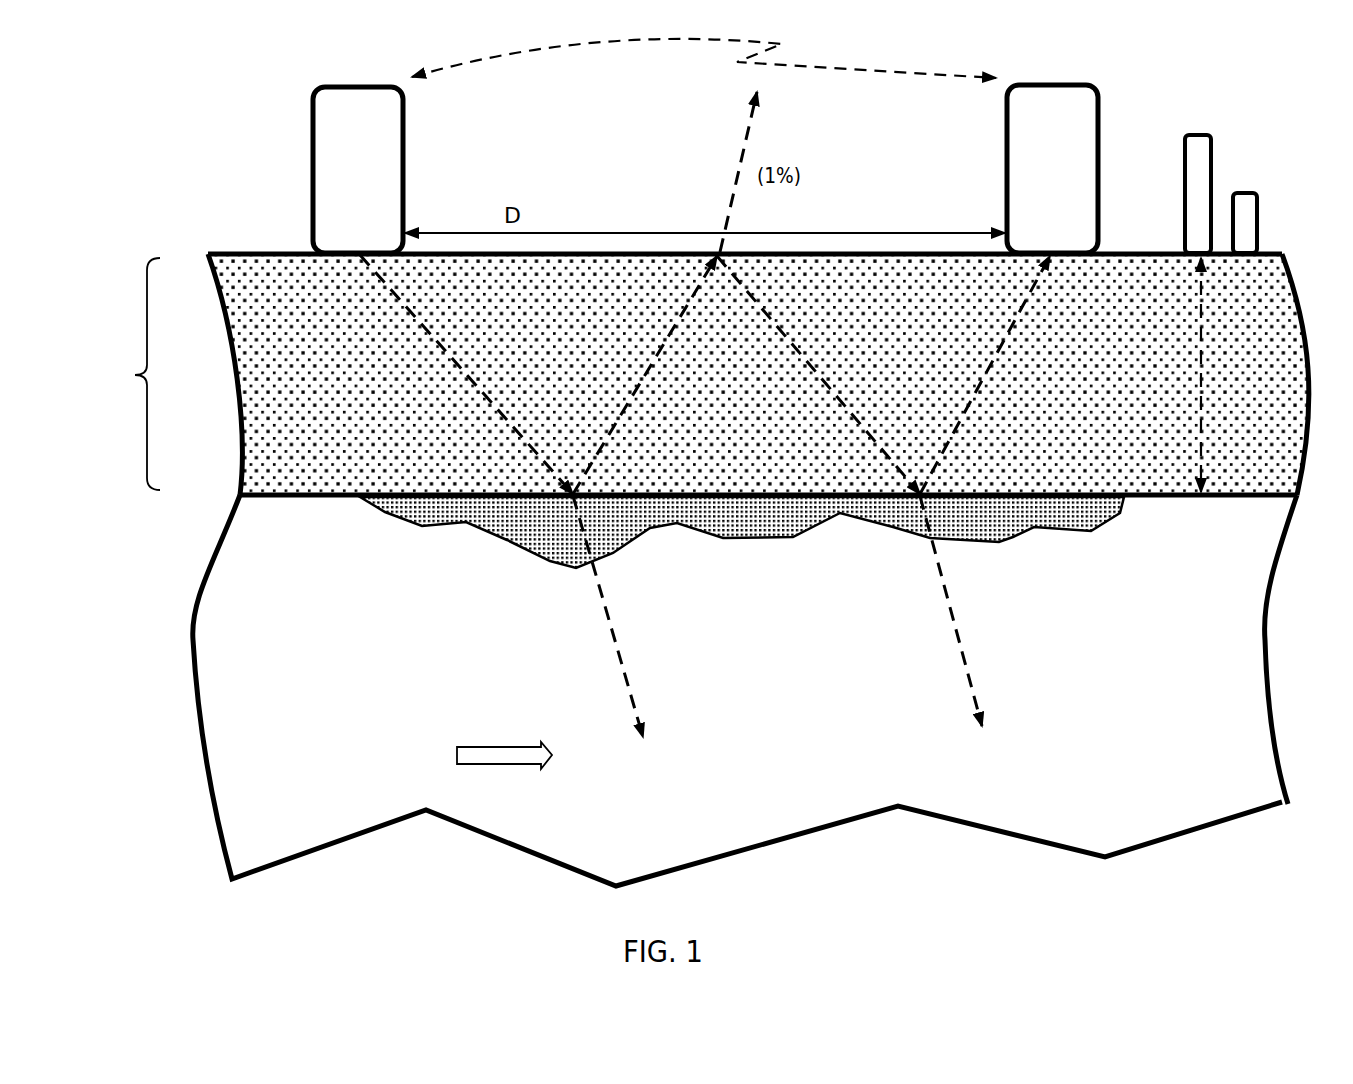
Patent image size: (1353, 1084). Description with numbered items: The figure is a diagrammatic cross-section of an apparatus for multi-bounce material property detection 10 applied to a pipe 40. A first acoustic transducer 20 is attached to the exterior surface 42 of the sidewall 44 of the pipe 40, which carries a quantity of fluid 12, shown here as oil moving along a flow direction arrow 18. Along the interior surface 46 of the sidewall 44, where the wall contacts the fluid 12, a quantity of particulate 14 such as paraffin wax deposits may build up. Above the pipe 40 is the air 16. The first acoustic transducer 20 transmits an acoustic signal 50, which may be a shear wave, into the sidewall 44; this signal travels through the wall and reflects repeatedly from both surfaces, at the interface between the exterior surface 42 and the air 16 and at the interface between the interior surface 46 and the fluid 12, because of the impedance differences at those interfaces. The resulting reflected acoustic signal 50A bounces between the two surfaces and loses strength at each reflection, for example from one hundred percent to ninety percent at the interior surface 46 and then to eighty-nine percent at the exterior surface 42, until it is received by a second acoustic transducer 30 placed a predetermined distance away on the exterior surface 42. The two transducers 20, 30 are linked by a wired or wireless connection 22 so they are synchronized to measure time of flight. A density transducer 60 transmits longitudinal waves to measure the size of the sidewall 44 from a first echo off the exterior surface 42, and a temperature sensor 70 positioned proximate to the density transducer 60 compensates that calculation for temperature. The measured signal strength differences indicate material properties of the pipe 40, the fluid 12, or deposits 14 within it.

The apparatus for multi-bounce material property detection 10 is at (148, 142).
The fluid 12 is at (389, 706).
The particulate 14 is at (510, 542).
The air 16 is at (638, 127).
The flow direction arrow 18 is at (497, 760).
The first acoustic transducer 20 is at (403, 118).
The connection 22 is at (875, 63).
The second acoustic transducer 30 is at (1098, 103).
The pipe 40 is at (915, 330).
The exterior surface 42 is at (268, 243).
The sidewall 44 is at (640, 375).
The interior surface 46 is at (284, 506).
The acoustic signal 50 is at (480, 373).
The reflected acoustic signal 50A is at (800, 375).
The density transducer 60 is at (1211, 163).
The temperature sensor 70 is at (1257, 222).